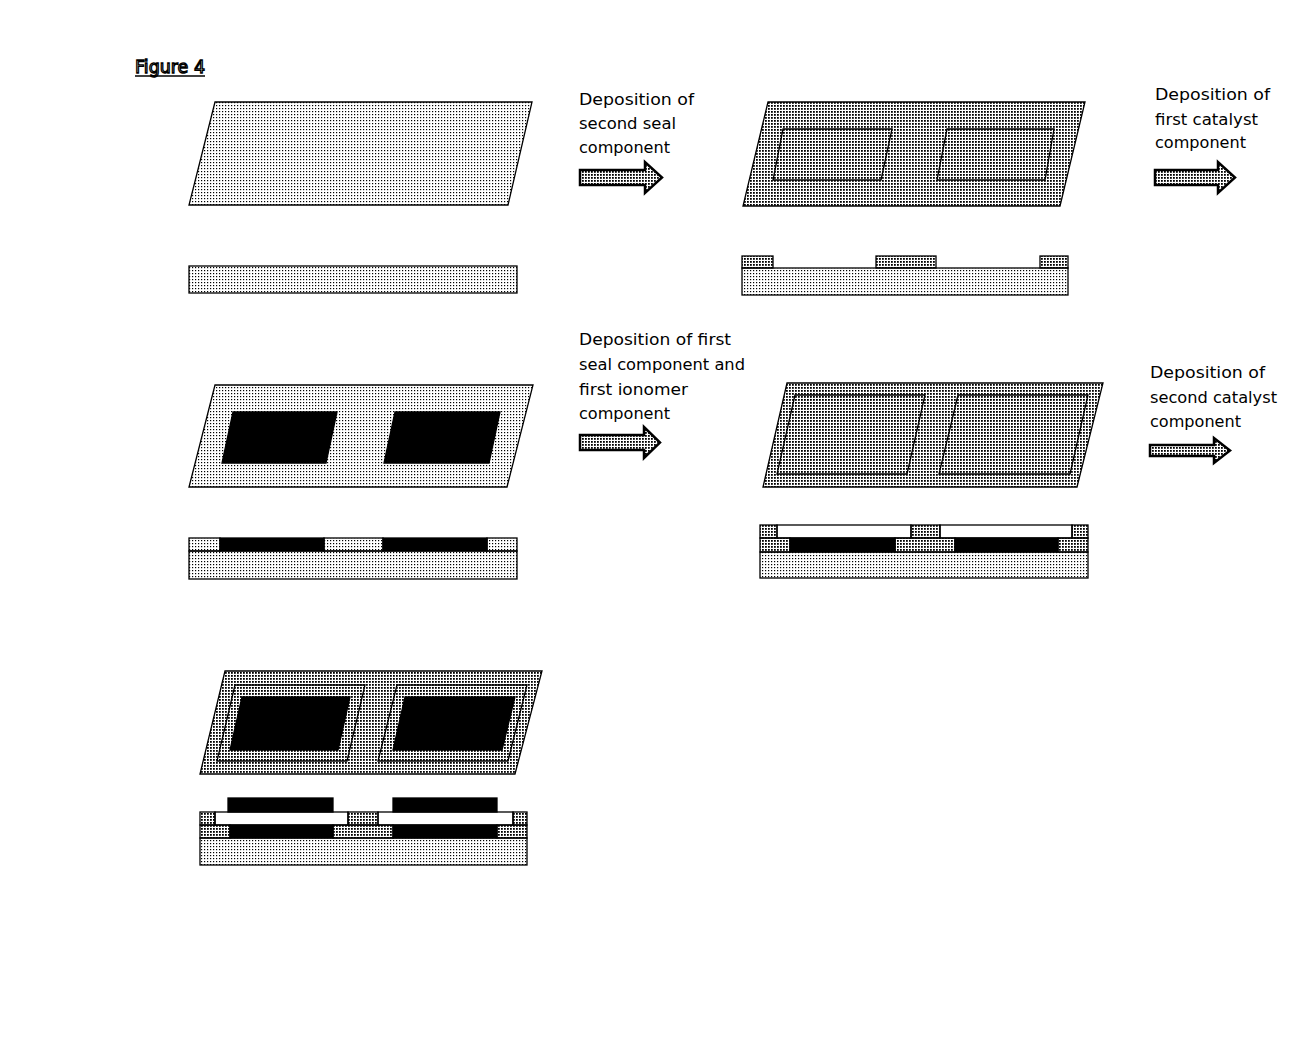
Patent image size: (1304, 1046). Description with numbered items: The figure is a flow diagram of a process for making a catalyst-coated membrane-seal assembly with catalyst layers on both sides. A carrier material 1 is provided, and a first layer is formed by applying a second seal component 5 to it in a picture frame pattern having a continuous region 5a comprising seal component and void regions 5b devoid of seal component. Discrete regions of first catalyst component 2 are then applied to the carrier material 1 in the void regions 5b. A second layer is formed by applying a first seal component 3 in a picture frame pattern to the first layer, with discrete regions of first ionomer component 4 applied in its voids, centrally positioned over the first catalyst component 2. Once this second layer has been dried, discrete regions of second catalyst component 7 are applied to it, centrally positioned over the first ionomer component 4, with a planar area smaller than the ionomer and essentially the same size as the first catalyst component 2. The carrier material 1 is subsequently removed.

The carrier material 1 is at (317, 197).
The second seal component 5 is at (918, 166).
The continuous region 5a is at (1053, 113).
The void regions 5b is at (980, 198).
The first catalyst component 2 is at (311, 482).
The first seal component 3 is at (878, 480).
The first ionomer component 4 is at (983, 505).
The second catalyst component 7 is at (323, 768).